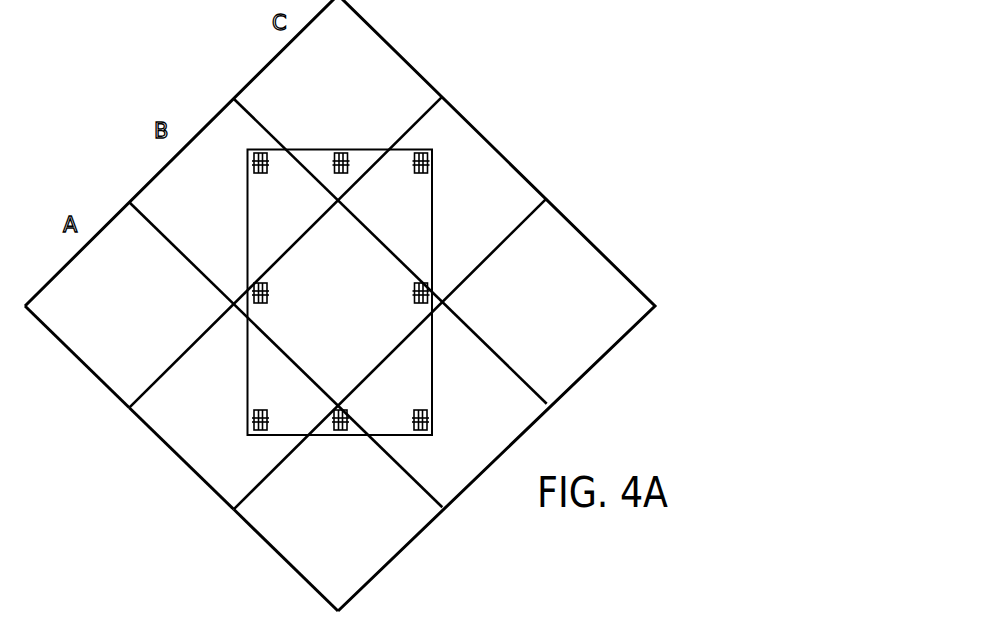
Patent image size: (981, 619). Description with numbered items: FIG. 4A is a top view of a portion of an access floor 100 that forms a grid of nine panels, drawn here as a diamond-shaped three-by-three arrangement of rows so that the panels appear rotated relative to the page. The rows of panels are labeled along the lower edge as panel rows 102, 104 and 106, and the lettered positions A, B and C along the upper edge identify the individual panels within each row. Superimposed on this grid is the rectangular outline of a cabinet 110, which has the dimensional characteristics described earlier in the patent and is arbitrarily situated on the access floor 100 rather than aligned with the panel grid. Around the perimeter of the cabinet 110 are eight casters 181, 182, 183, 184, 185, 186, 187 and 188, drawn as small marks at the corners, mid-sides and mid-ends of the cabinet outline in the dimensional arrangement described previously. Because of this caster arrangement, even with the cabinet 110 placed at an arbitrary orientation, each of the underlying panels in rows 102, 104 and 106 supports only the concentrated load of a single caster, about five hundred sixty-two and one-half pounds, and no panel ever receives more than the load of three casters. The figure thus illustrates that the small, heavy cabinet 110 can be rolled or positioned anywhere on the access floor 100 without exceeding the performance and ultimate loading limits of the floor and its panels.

The access floor 100 is at (340, 305).
The access floor panel row 102 is at (77, 360).
The access floor panel row 104 is at (177, 459).
The access floor panel row 106 is at (286, 560).
The cabinet 110 is at (411, 285).
The caster 181 is at (234, 153).
The caster 182 is at (367, 135).
The caster 183 is at (448, 155).
The caster 184 is at (297, 279).
The caster 185 is at (451, 269).
The caster 186 is at (279, 401).
The caster 187 is at (362, 377).
The caster 188 is at (452, 400).